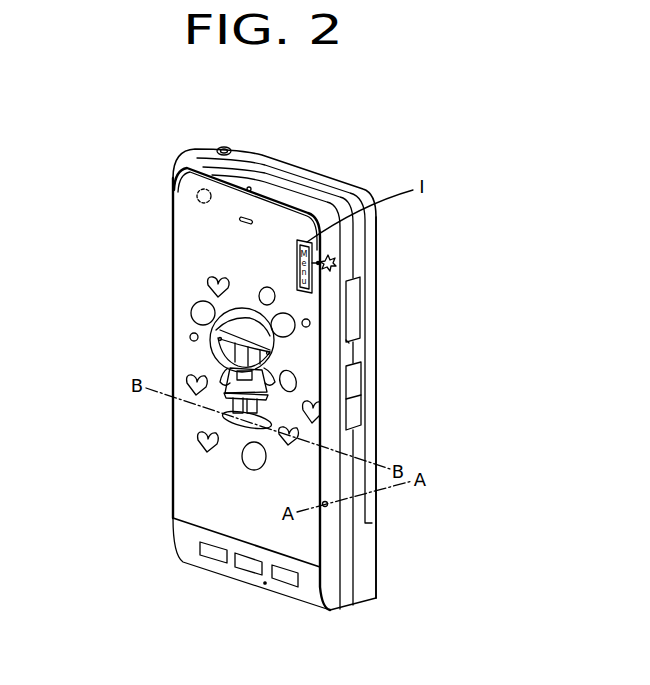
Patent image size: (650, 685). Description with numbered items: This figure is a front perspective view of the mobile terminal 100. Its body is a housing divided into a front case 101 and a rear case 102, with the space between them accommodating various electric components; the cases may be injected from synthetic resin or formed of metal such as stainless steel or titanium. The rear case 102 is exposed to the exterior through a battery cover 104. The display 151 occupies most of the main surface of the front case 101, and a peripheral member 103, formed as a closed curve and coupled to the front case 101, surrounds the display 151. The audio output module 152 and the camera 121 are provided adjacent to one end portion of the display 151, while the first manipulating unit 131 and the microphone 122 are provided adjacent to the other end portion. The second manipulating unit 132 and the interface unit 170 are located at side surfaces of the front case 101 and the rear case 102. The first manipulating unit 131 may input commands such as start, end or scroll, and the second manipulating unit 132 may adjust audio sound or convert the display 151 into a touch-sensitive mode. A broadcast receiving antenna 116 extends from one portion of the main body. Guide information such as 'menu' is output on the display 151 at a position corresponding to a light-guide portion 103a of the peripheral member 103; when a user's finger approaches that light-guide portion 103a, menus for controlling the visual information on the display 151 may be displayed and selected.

The mobile terminal 100 is at (122, 311).
The front case 101 is at (317, 190).
The rear case 102 is at (343, 190).
The peripheral member 103 is at (280, 192).
The light-guide portion 103a is at (336, 262).
The battery cover 104 is at (373, 240).
The broadcast receiving antenna 116 is at (222, 147).
The camera 121 is at (196, 195).
The microphone 122 is at (265, 584).
The first manipulating unit 131 is at (197, 558).
The second manipulating unit 132 is at (357, 405).
The display 151 is at (185, 463).
The audio output module 152 is at (240, 219).
The interface unit 170 is at (355, 308).